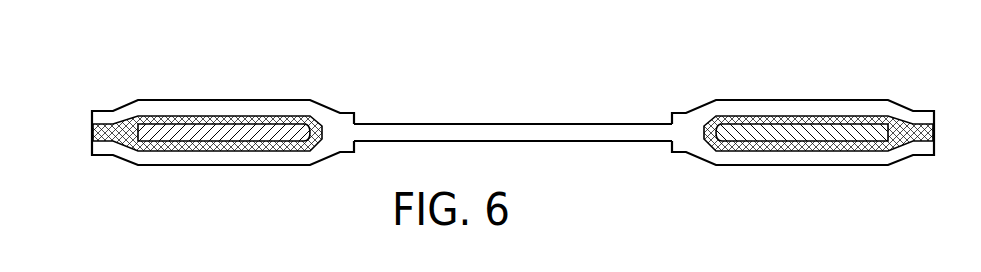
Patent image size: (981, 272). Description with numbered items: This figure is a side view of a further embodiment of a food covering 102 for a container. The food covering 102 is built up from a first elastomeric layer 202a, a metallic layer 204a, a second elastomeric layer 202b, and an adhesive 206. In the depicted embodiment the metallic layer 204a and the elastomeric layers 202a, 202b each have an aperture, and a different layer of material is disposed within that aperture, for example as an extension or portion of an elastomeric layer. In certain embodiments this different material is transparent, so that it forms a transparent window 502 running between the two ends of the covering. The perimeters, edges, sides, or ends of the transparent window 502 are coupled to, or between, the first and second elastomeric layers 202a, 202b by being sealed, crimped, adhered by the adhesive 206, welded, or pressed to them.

The food covering 102 is at (106, 65).
The first elastomeric layer 202a is at (211, 105).
The second elastomeric layer 202b is at (174, 158).
The metallic layer 204a is at (244, 133).
The adhesive 206 is at (114, 141).
The transparent window 502 is at (393, 129).